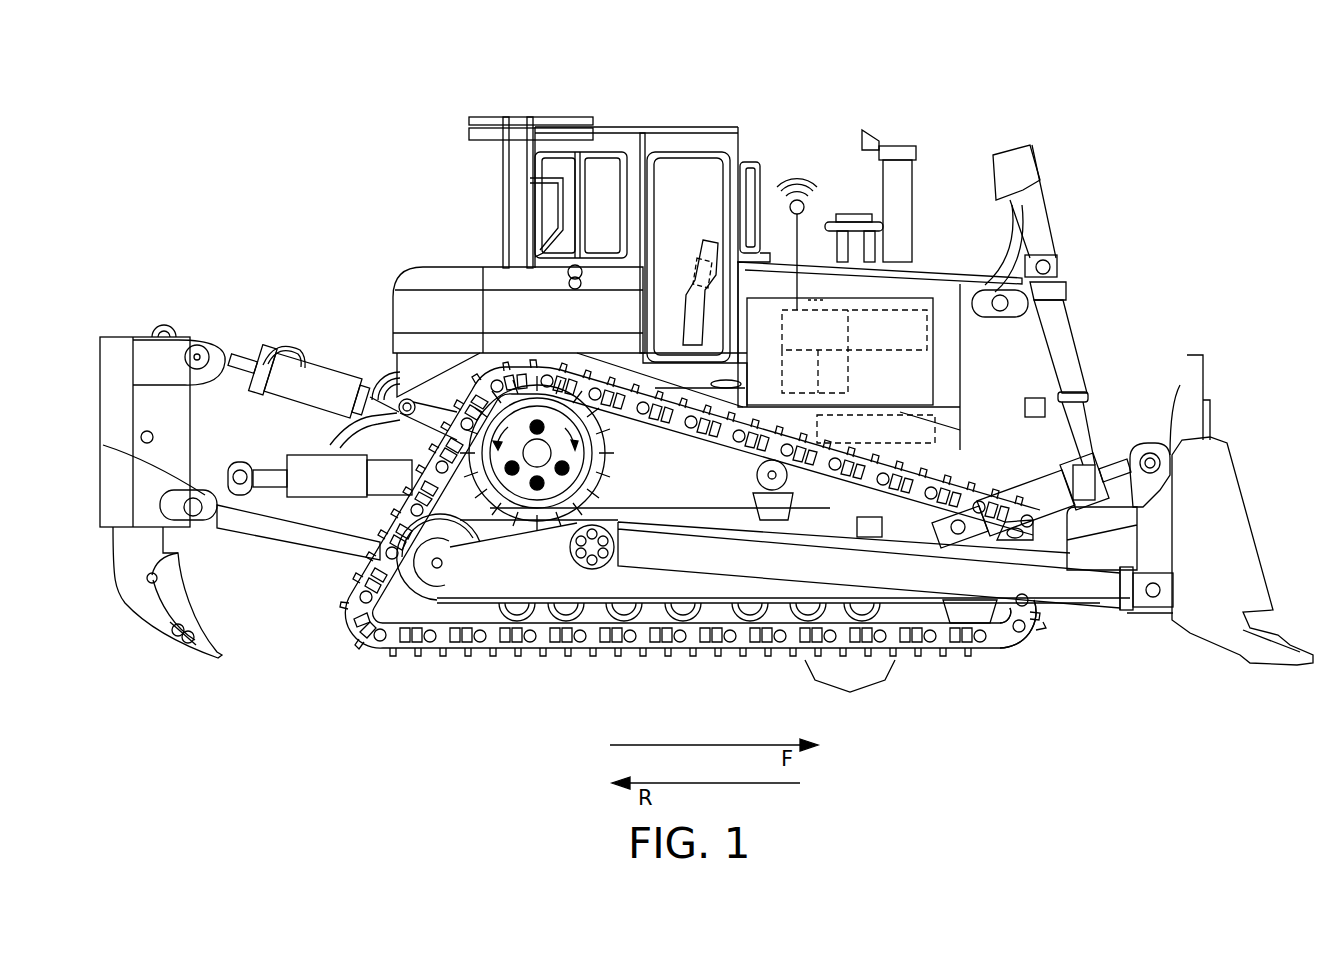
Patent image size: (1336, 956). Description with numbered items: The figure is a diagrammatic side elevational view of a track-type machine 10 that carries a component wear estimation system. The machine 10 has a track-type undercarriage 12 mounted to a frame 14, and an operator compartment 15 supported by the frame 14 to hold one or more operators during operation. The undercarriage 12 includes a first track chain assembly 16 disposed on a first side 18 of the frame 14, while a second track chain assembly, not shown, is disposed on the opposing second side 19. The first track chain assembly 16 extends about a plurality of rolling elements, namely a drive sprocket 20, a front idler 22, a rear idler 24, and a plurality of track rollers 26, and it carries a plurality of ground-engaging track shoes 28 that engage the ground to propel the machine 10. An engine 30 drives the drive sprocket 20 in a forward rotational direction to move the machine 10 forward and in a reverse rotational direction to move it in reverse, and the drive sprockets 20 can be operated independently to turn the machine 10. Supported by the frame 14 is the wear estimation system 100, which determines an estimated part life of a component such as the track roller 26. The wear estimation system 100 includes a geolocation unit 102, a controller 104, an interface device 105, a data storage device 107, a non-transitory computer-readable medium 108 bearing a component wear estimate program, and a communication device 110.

The machine 10 is at (927, 104).
The track-type undercarriage 12 is at (370, 650).
The frame 14 is at (1020, 450).
The operator compartment 15 is at (715, 185).
The first track chain assembly 16 is at (588, 668).
The first side 18 is at (428, 305).
The second side 19 is at (456, 258).
The drive sprocket 20 is at (582, 447).
The front idler 22 is at (990, 645).
The rear idler 24 is at (432, 640).
The track rollers 26 is at (730, 662).
The ground-engaging track shoes 28 is at (877, 665).
The engine 30 is at (937, 420).
The wear estimation system 100 is at (850, 235).
The geolocation unit 102 is at (790, 225).
The controller 104 is at (816, 305).
The interface device 105 is at (700, 268).
The data storage device 107 is at (935, 392).
The non-transitory computer-readable medium 108 is at (933, 350).
The communication device 110 is at (905, 310).